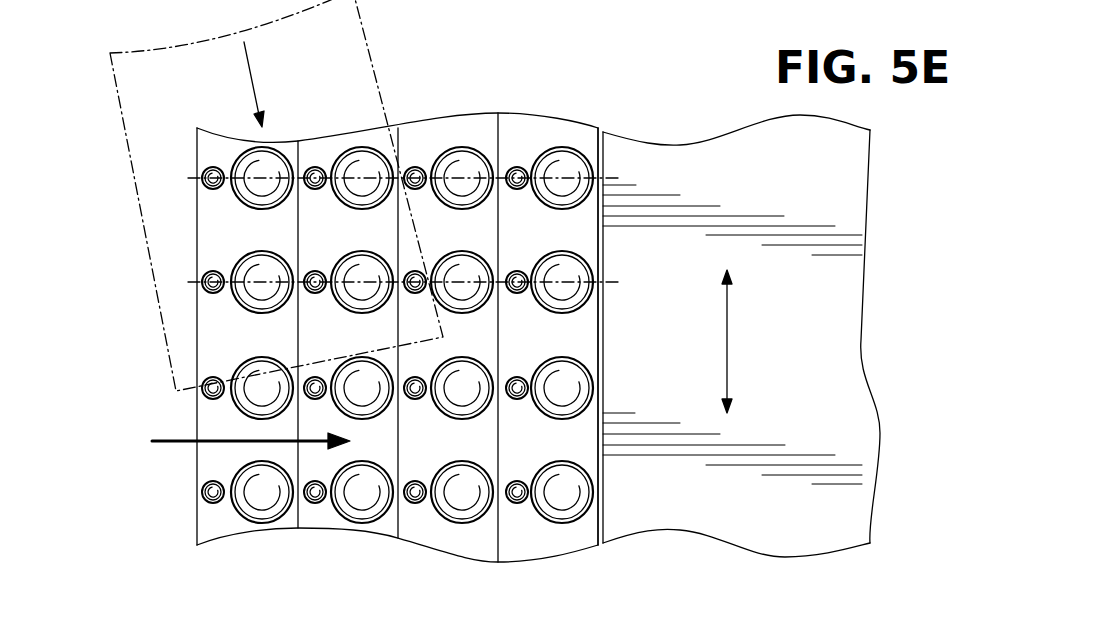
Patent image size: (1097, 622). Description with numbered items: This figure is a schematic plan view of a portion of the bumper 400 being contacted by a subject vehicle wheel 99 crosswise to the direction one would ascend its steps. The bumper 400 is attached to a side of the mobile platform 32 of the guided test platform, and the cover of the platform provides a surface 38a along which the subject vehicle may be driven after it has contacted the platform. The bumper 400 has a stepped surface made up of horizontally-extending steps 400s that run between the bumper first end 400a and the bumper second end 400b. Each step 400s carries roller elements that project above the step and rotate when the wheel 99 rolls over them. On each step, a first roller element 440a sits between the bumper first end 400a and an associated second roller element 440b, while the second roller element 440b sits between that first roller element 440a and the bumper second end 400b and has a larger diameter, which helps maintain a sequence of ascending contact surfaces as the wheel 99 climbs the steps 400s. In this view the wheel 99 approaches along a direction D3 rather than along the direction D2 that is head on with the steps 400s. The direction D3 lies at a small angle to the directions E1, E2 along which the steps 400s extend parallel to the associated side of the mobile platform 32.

The bumper 400 is at (415, 306).
The bumper first end 400a is at (197, 420).
The bumper second end 400b is at (598, 337).
The steps 400s is at (527, 133).
The first roller element 440a is at (206, 172).
The second roller element 440b is at (362, 166).
The subject vehicle wheel 99 is at (118, 246).
The mobile platform 32 is at (776, 333).
The surface 38a is at (812, 334).
The direction D2 is at (218, 442).
The direction D3 is at (250, 83).
The direction E1 is at (744, 335).
The direction E2 is at (744, 408).